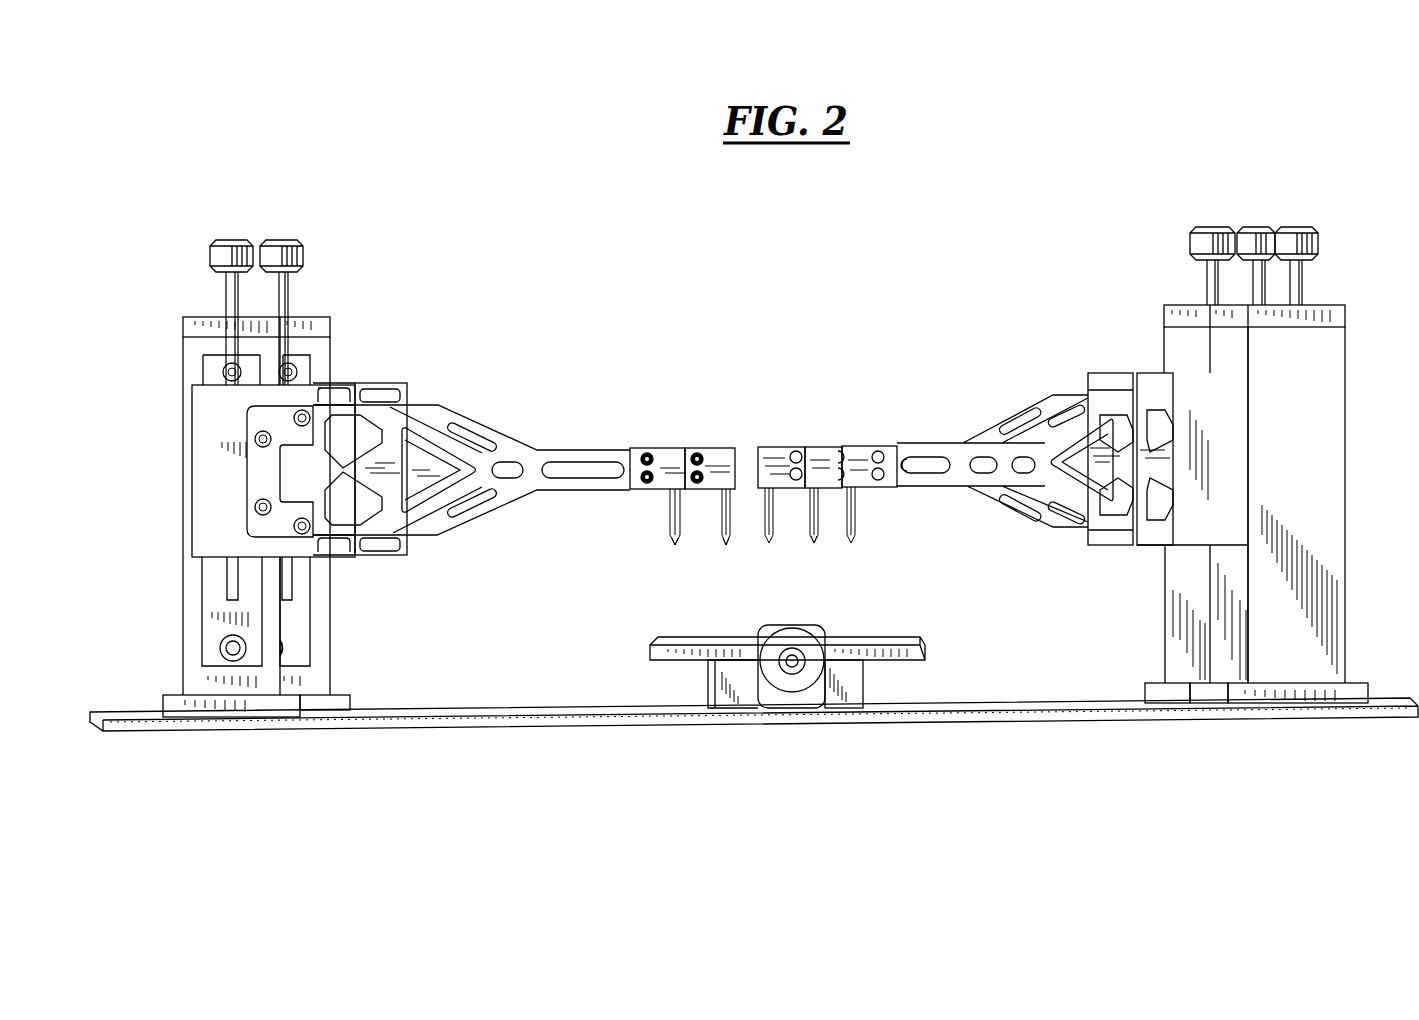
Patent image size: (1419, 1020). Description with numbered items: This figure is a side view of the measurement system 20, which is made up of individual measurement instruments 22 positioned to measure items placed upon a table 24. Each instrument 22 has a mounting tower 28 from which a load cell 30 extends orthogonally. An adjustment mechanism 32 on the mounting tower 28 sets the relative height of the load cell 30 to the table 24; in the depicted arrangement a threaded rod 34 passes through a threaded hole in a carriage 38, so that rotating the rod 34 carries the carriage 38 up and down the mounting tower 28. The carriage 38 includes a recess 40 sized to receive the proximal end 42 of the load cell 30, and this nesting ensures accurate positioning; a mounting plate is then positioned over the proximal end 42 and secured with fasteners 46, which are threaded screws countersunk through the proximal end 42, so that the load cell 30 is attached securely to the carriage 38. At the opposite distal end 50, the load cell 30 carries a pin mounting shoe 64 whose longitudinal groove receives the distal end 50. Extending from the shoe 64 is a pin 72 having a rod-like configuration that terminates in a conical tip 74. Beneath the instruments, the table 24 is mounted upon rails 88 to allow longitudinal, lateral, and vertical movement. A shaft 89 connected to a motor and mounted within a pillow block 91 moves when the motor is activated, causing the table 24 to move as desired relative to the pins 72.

The measurement system 20 is at (862, 296).
The measurement instrument 22 is at (302, 738).
The table 24 is at (925, 650).
The mounting tower 28 is at (338, 362).
The load cell 30 is at (485, 416).
The adjustment mechanism 32 is at (255, 232).
The threaded rod 34 is at (228, 292).
The carriage 38 is at (215, 457).
The recess 40 is at (245, 492).
The proximal end 42 is at (270, 400).
The fastener 46 is at (258, 437).
The distal end 50 is at (605, 446).
The pin mounting shoe 64 is at (722, 448).
The pin 72 is at (670, 500).
The conical tip 74 is at (672, 540).
The rail 88 is at (735, 690).
The shaft 89 is at (798, 672).
The pillow block 91 is at (823, 628).